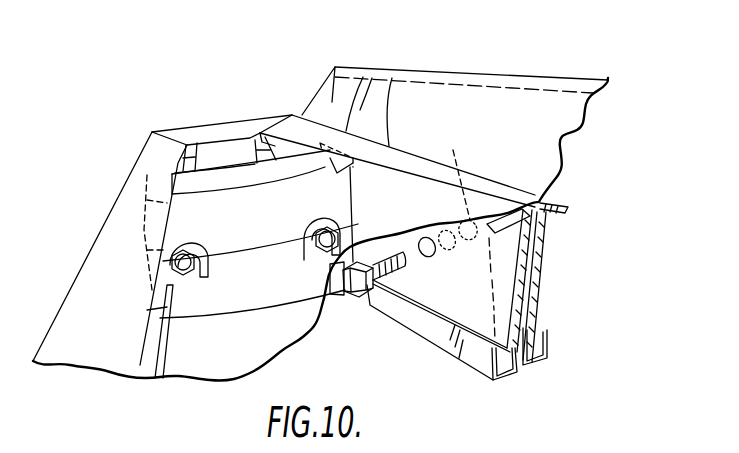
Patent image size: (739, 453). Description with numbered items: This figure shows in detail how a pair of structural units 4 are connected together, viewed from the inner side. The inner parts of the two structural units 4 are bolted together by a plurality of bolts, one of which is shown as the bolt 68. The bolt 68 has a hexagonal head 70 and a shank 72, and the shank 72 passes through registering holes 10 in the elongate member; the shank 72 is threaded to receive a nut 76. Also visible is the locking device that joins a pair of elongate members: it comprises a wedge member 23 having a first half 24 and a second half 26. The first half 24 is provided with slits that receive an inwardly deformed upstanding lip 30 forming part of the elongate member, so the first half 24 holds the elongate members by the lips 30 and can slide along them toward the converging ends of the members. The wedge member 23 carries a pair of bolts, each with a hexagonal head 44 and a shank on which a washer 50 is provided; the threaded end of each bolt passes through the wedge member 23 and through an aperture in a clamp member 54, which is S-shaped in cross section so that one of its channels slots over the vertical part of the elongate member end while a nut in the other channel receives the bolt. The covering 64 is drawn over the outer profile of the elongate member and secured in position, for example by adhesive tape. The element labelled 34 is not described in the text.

The structural unit 4 is at (576, 156).
The registering holes 10 is at (446, 229).
The wedge member 23 is at (217, 158).
The first half 24 is at (188, 173).
The second half 26 is at (261, 280).
The upstanding lip 30 is at (162, 367).
The wall panel 34 is at (107, 358).
The hexagonal head 44 is at (187, 273).
The washer 50 is at (200, 243).
The clamp member 54 is at (192, 142).
The covering 64 is at (558, 123).
The bolt 68 is at (409, 272).
The hexagonal head 70 is at (358, 298).
The shank 72 is at (380, 284).
The nut 76 is at (456, 175).